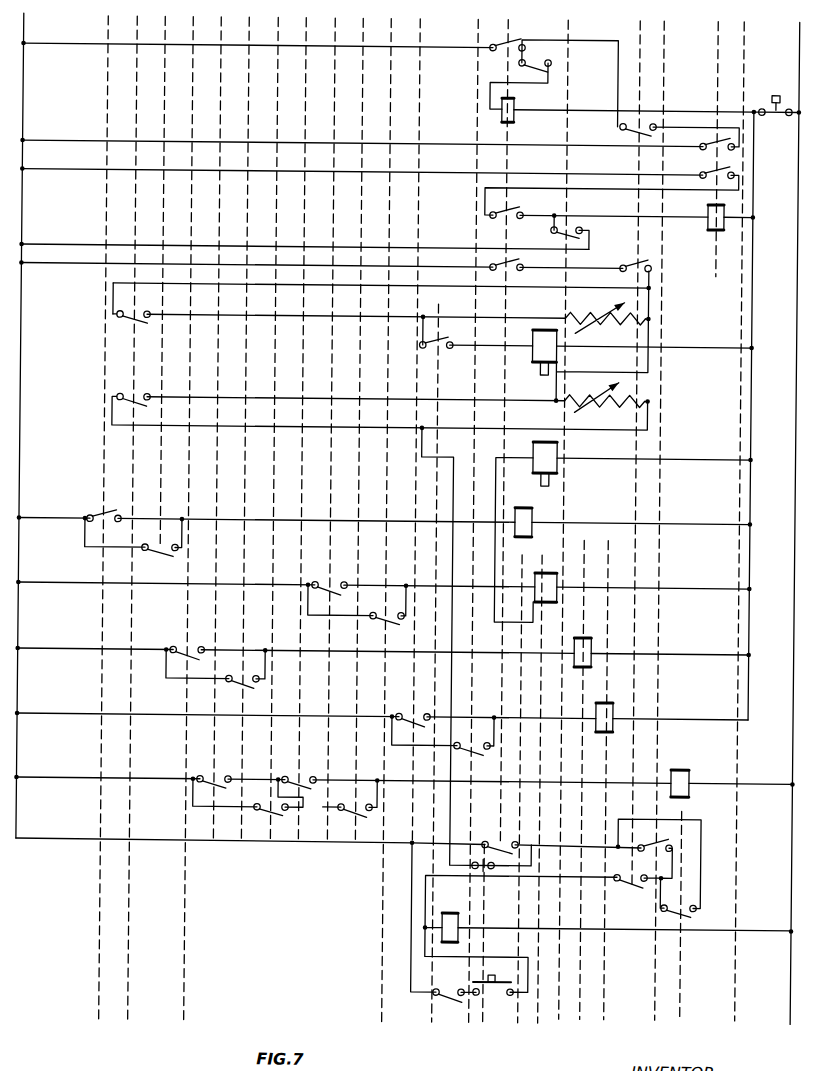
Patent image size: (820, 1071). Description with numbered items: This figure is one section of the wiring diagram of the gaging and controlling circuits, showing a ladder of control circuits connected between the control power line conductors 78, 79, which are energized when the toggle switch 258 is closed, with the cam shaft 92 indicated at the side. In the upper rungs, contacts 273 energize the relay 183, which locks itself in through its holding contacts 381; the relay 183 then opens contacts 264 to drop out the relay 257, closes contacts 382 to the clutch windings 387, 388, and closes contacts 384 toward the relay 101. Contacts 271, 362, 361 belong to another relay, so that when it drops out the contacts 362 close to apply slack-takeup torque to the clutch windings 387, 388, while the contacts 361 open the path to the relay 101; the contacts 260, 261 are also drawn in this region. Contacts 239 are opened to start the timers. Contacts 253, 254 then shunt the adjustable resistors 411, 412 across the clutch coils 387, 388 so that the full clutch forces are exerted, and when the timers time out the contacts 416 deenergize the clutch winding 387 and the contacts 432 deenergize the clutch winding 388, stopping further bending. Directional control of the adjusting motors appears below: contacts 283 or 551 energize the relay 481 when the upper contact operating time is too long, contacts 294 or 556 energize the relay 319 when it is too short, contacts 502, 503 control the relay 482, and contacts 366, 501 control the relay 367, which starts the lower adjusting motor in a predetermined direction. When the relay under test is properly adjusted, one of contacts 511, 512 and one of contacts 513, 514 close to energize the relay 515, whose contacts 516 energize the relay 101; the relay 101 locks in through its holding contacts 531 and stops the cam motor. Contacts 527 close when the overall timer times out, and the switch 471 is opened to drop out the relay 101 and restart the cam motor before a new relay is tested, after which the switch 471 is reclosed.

The control power line conductor 78 is at (24, 30).
The control power line conductor 79 is at (799, 268).
The shaft 92 is at (733, 958).
The holding contacts 381 is at (524, 45).
The contacts 273 is at (553, 63).
The relay 183 is at (514, 107).
The contacts 271 is at (628, 128).
The switch contact 260 is at (708, 134).
The switch contact 261 is at (706, 162).
The toggle switch 258 is at (777, 113).
The contacts 264 is at (520, 207).
The relay 257 is at (708, 225).
The contacts 239 is at (583, 225).
The contacts 382 is at (521, 258).
The contacts 362 is at (643, 257).
The contacts 253 is at (136, 322).
The contacts 254 is at (118, 391).
The contacts 416 is at (450, 341).
The clutch winding 387 is at (535, 330).
The adjustable resistor 411 is at (615, 302).
The adjustable resistor 412 is at (625, 396).
The clutch winding 388 is at (560, 461).
The relay 481 is at (538, 511).
The contacts 283 is at (99, 511).
The contacts 551 is at (160, 554).
The relay 319 is at (562, 575).
The contacts 556 is at (338, 598).
The contacts 294 is at (375, 625).
The relay 482 is at (592, 640).
The contacts 503 is at (181, 645).
The contacts 502 is at (258, 688).
The contacts 366 is at (418, 724).
The contacts 501 is at (466, 736).
The relay 367 is at (622, 686).
The contacts 512 is at (230, 775).
The contacts 514 is at (303, 773).
The contacts 511 is at (287, 813).
The contacts 513 is at (345, 806).
The relay 515 is at (700, 762).
The contacts 384 is at (496, 834).
The contacts 432 is at (488, 858).
The contacts 527 is at (676, 833).
The contacts 361 is at (636, 882).
The contacts 516 is at (692, 908).
The relay 101 is at (445, 922).
The holding contacts 531 is at (436, 996).
The switch 471 is at (505, 990).